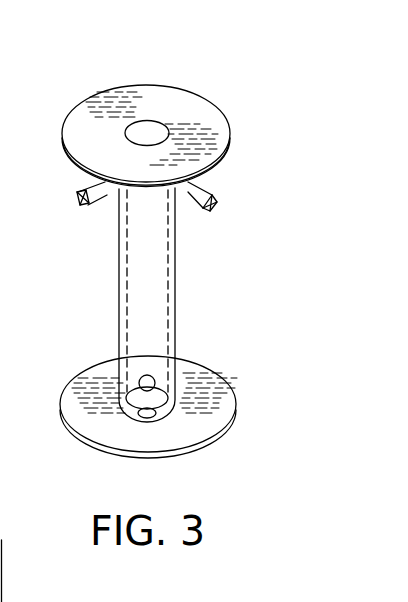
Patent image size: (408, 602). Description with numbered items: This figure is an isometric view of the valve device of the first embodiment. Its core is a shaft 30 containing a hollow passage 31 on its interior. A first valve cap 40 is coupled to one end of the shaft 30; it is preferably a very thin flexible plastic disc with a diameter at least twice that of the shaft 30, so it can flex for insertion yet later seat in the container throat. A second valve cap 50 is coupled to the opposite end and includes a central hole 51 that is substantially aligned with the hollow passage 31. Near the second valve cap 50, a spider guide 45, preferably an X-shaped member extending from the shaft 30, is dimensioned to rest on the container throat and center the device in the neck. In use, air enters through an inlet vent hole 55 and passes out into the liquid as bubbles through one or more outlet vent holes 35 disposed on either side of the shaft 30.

The shaft 30 is at (177, 315).
The hollow passage 31 is at (124, 300).
The outlet vent hole 35 is at (156, 418).
The first valve cap 40 is at (80, 446).
The spider guide 45 is at (195, 208).
The second valve cap 50 is at (210, 126).
The central hole 51 is at (133, 116).
The inlet vent hole 55 is at (150, 132).